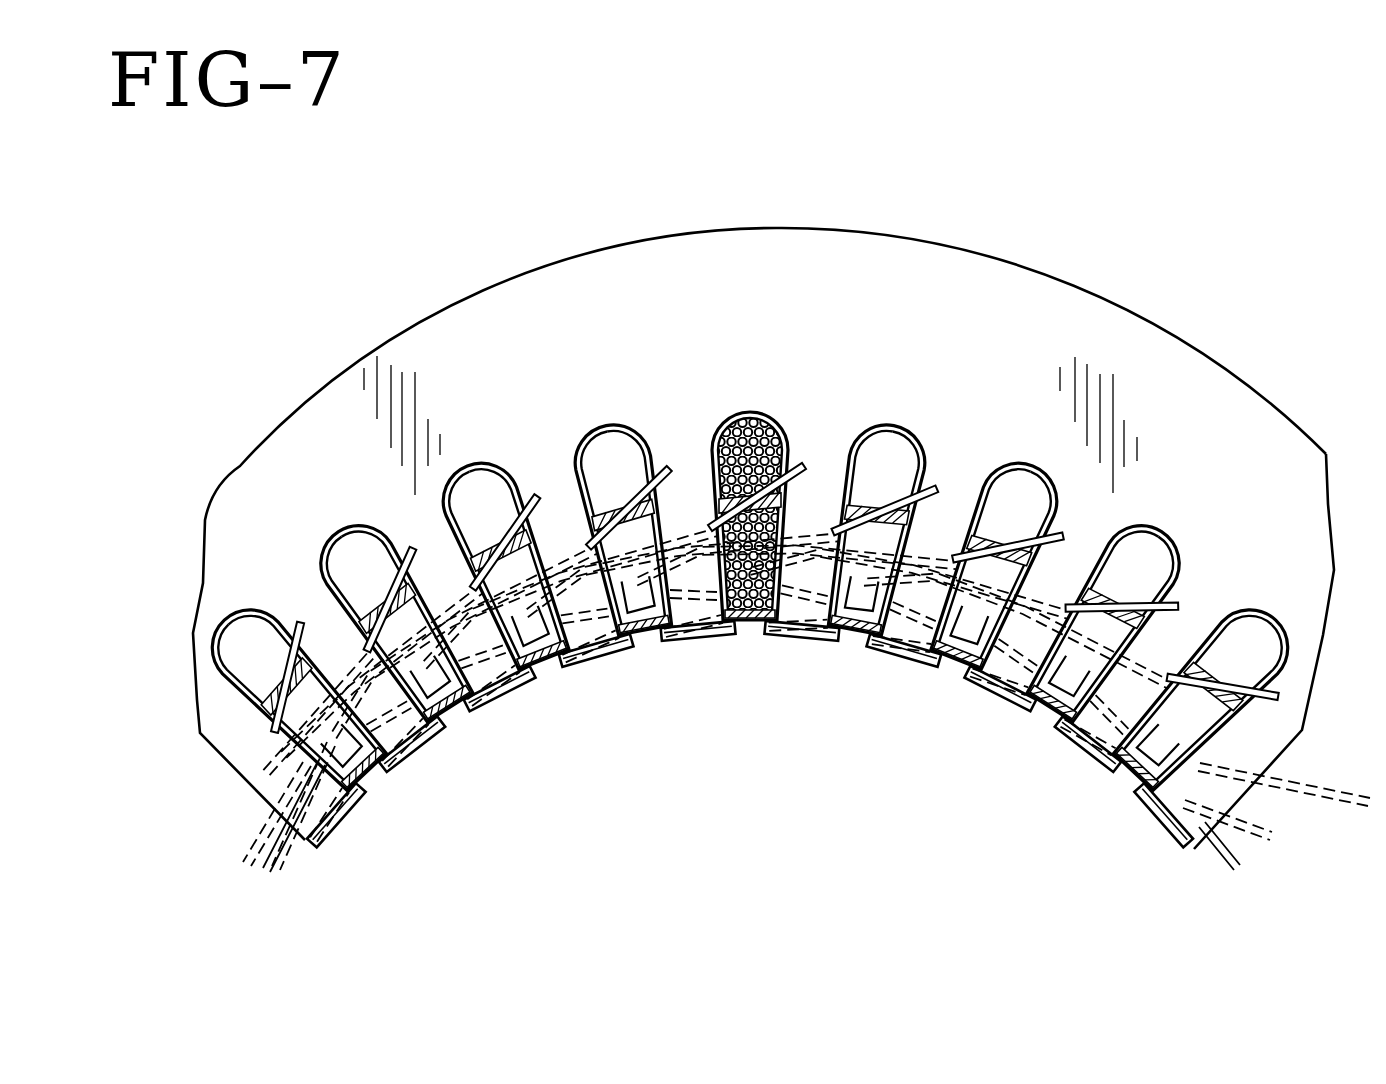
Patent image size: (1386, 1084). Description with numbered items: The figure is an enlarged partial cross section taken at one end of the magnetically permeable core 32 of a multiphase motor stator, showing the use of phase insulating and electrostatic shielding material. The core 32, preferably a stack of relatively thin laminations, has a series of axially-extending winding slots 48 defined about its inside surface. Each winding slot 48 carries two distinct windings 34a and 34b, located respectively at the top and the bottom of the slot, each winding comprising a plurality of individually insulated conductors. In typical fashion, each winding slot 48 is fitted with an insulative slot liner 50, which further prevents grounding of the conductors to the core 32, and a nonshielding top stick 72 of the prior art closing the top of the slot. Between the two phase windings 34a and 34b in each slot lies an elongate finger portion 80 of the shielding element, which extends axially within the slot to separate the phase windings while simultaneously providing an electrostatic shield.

The magnetically permeable core 32 is at (577, 256).
The winding 34a is at (718, 520).
The winding 34b is at (767, 410).
The winding slot 48 is at (752, 410).
The slot liner 50 is at (790, 457).
The top stick 72 is at (895, 597).
The elongate finger portion 80 is at (606, 520).